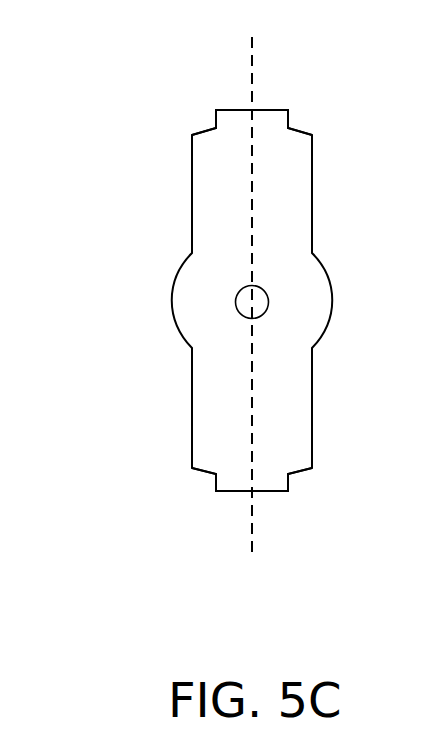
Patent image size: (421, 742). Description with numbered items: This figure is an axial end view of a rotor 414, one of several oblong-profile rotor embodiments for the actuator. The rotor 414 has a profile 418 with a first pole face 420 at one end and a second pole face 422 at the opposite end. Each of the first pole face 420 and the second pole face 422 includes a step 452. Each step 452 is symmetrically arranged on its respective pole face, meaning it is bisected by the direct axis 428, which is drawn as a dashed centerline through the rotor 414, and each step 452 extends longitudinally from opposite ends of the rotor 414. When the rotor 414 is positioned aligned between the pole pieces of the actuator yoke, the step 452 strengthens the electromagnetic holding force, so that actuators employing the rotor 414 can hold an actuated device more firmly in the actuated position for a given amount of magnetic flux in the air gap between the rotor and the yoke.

The rotor 414 is at (143, 493).
The profile 418 is at (219, 384).
The first pole face 420 is at (230, 110).
The second pole face 422 is at (230, 491).
The direct axis 428 is at (253, 532).
The step 452 is at (260, 117).